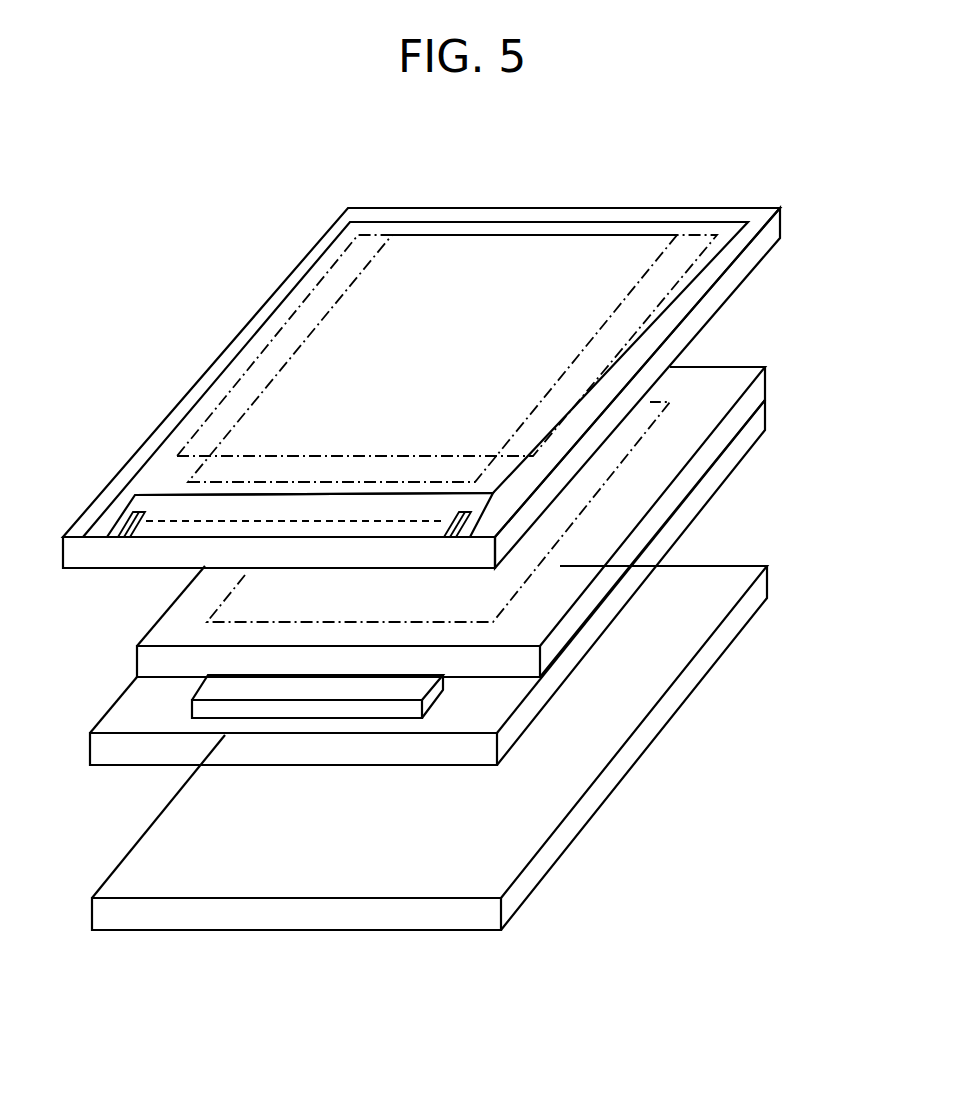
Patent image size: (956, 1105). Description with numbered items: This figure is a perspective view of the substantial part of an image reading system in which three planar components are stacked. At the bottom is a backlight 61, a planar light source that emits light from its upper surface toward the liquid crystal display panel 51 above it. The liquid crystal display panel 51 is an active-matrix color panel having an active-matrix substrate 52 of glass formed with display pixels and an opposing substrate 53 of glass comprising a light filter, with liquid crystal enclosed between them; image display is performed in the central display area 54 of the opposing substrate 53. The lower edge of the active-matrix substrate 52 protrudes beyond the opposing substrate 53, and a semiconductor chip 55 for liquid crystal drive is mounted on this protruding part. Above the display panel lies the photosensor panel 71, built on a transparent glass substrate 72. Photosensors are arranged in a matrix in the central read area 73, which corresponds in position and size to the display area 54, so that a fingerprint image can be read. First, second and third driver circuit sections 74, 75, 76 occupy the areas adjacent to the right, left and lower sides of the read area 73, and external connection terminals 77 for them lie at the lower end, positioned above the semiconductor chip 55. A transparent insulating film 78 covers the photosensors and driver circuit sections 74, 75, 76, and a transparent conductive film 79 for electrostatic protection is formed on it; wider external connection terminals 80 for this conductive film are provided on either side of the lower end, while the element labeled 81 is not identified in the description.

The liquid crystal display panel 51 is at (466, 591).
The active-matrix substrate 52 is at (553, 679).
The opposing substrate 53 is at (585, 613).
The display area 54 is at (588, 486).
The semiconductor chip 55 is at (325, 685).
The backlight 61 is at (747, 636).
The photosensor panel 71 is at (437, 346).
The glass substrate 72 is at (783, 217).
The read area 73 is at (493, 275).
The first driver circuit section 74 is at (655, 300).
The second driver circuit section 75 is at (293, 340).
The third driver circuit section 76 is at (200, 472).
The external connection terminals for the driver circuit sections 77 is at (128, 518).
The transparent insulating film 78 is at (640, 215).
The transparent conductive film 79 is at (213, 393).
The external connection terminal for the transparent conductive film 80 is at (100, 527).
The inner edge line 81 is at (137, 480).